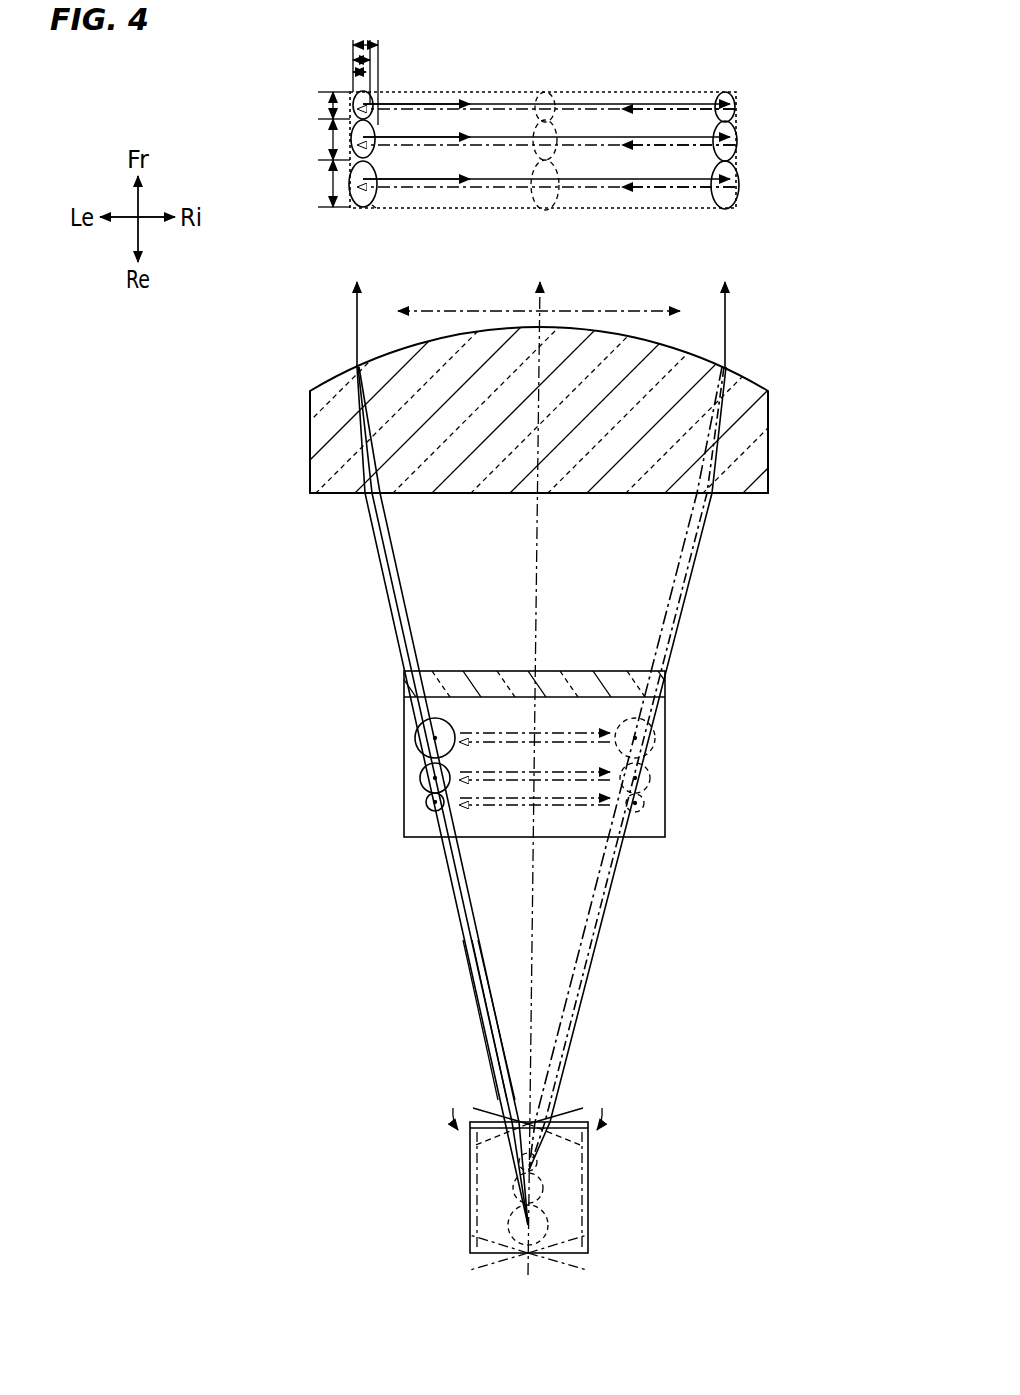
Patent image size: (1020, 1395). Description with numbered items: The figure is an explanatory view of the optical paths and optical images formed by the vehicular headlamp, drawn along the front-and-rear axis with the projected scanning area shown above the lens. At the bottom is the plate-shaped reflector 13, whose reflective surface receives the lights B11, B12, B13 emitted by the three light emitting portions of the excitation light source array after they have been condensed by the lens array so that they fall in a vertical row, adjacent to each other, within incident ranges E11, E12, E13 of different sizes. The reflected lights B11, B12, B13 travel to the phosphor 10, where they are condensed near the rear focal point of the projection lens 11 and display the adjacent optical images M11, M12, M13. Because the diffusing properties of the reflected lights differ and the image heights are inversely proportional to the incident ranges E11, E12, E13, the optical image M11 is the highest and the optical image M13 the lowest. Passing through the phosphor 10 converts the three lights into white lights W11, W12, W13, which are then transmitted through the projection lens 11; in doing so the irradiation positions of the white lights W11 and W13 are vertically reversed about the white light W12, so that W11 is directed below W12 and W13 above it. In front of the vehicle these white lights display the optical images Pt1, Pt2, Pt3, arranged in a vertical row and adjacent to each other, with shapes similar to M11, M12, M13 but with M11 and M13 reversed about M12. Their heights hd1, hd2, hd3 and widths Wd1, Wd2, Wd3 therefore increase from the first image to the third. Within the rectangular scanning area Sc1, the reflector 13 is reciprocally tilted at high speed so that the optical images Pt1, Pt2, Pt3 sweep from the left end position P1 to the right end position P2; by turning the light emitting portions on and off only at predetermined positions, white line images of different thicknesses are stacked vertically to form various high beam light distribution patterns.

The phosphor 10 is at (666, 688).
The projection lens 11 is at (770, 442).
The reflector 13 is at (589, 1155).
The white light W11 is at (396, 592).
The white light W12 is at (403, 622).
The white light W13 is at (409, 650).
The optical image M11 is at (415, 742).
The optical image M12 is at (420, 776).
The optical image M13 is at (426, 802).
The light B11 is at (470, 980).
The light B12 is at (480, 1008).
The light B13 is at (487, 1043).
The incident range E11 is at (519, 1162).
The incident range E12 is at (513, 1188).
The incident range E13 is at (508, 1225).
The scanning area Sc1 is at (678, 212).
The left end position P1 is at (346, 208).
The right end position P2 is at (737, 120).
The optical image Pt1 is at (376, 96).
The optical image Pt2 is at (382, 125).
The optical image Pt3 is at (374, 206).
The width of optical image Pt1 Wd1 is at (366, 42).
The width of optical image Pt2 Wd2 is at (360, 59).
The width of optical image Pt3 Wd3 is at (358, 72).
The height of optical image Pt1 hd1 is at (317, 106).
The height of optical image Pt2 hd2 is at (317, 139).
The height of optical image Pt3 hd3 is at (317, 183).